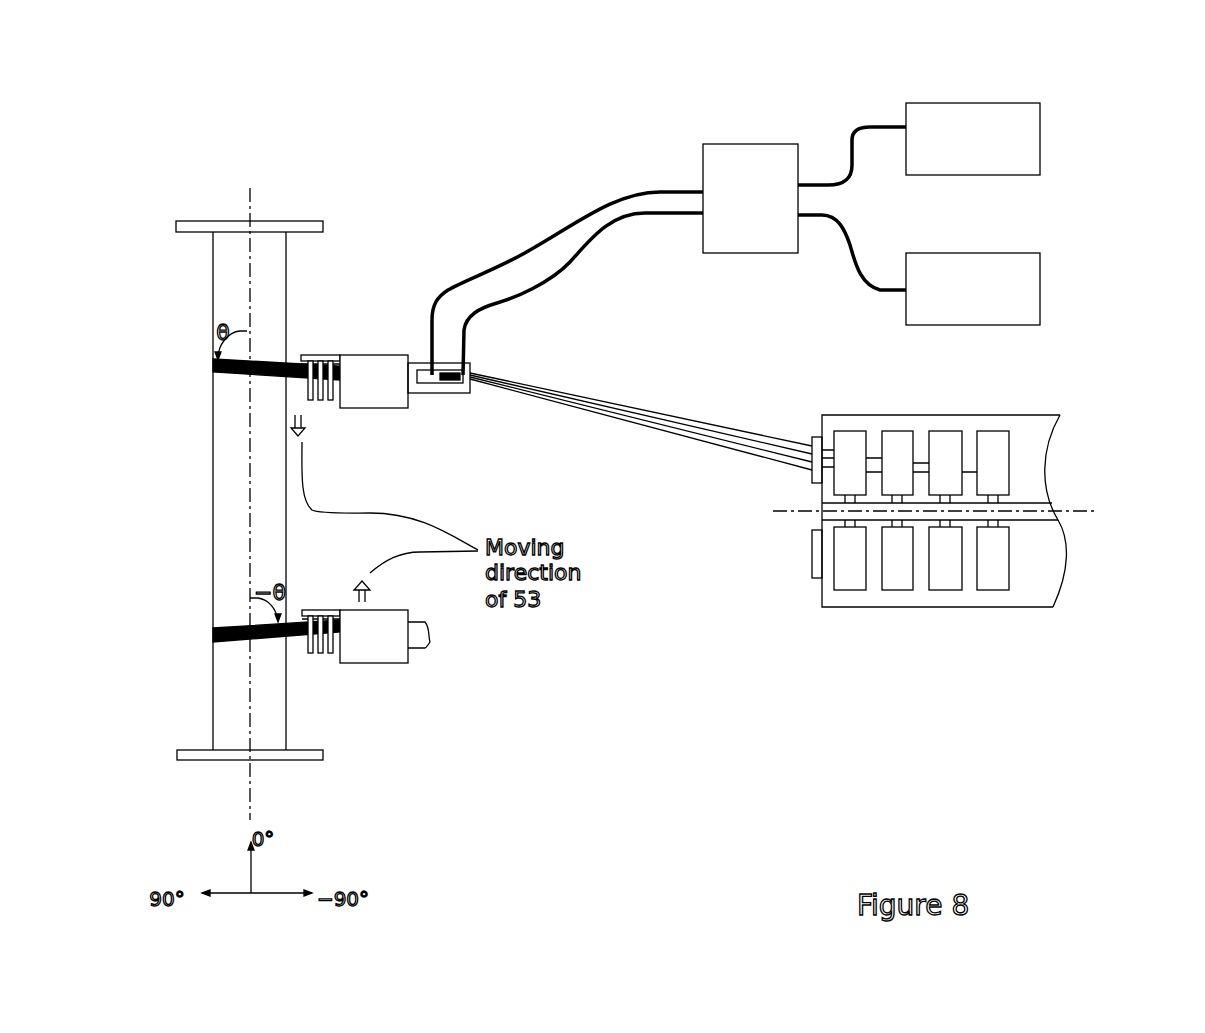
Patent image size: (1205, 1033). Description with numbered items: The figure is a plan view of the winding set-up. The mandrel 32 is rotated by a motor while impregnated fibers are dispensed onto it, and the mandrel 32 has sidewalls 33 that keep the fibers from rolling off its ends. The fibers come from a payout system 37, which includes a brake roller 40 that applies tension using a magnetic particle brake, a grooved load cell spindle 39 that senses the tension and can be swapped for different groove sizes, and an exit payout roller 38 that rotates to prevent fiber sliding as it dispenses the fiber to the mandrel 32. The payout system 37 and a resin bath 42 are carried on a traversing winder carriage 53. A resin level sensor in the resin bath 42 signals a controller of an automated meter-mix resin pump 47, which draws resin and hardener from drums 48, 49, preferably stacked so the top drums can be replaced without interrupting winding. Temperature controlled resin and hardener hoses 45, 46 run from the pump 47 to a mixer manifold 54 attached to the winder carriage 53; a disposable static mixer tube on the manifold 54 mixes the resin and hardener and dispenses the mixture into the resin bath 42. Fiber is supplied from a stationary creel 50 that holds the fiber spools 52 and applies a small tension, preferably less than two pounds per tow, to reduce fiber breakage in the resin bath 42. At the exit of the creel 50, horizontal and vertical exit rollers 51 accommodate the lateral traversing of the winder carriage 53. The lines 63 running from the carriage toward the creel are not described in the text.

The mandrel 32 is at (213, 292).
The sidewalls 33 is at (198, 221).
The payout system 37 is at (312, 355).
The exit payout roller 38 is at (310, 400).
The grooved load cell spindle 39 is at (320, 400).
The brake roller 40 is at (330, 400).
The resin bath 42 is at (440, 384).
The resin hose 45 is at (580, 283).
The hardener hose 46 is at (527, 250).
The automated meter-mix resin pump 47 is at (748, 144).
The resin drum 48 is at (1040, 287).
The hardener drum 49 is at (1040, 140).
The stationary creel 50 is at (847, 607).
The horizontal and vertical exit rollers 51 is at (812, 543).
The fiber spools 52 is at (848, 431).
The traversing winder carriage 53 is at (370, 355).
The mixer manifold 54 is at (445, 372).
The optical fibers 63 is at (617, 422).